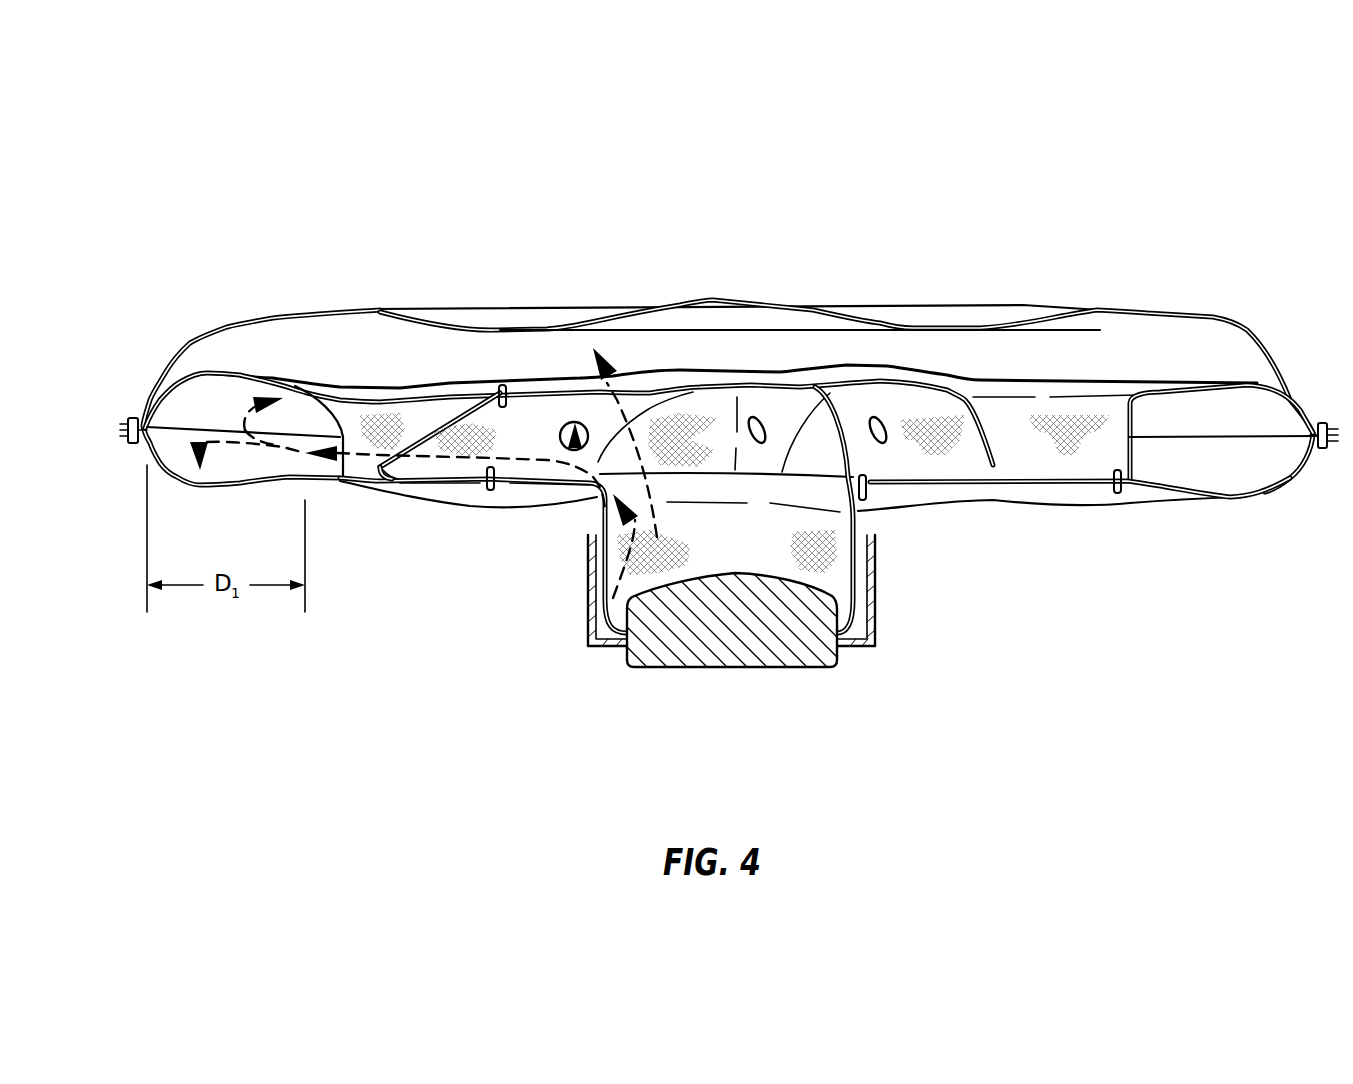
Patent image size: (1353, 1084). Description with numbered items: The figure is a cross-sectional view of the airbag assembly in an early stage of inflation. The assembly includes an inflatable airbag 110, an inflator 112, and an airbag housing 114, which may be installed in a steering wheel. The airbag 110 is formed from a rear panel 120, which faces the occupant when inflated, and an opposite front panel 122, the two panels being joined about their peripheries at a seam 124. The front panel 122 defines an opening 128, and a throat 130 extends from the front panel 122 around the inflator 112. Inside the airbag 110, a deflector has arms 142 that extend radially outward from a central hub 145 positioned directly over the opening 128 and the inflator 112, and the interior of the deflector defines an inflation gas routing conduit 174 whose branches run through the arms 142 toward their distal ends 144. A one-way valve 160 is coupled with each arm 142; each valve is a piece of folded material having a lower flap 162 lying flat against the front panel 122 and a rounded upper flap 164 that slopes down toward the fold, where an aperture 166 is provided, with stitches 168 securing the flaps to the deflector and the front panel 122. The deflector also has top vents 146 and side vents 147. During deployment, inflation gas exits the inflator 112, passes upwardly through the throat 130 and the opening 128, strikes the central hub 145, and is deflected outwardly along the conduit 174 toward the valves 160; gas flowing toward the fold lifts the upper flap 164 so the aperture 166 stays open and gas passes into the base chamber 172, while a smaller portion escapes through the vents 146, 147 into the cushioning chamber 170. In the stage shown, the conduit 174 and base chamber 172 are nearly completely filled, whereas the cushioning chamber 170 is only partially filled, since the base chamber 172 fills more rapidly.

The inflatable airbag 110 is at (1126, 180).
The inflator 112 is at (767, 667).
The airbag housing 114 is at (878, 610).
The rear panel 120 is at (1160, 312).
The front panel 122 is at (1160, 497).
The seam 124 is at (135, 415).
The opening 128 is at (785, 494).
The throat 130 is at (848, 570).
The arm 142 is at (449, 418).
The distal end 144 is at (308, 392).
The central hub 145 is at (734, 355).
The top vents 146 is at (596, 410).
The side vents 147 is at (555, 395).
The one-way valve 160 is at (430, 515).
The lower flap 162 is at (505, 487).
The upper flap 164 is at (437, 432).
The aperture 166 is at (380, 500).
The stitches 168 is at (502, 385).
The cushioning chamber 170 is at (333, 343).
The base chamber 172 is at (182, 388).
The inflation gas routing conduit 174 is at (563, 500).